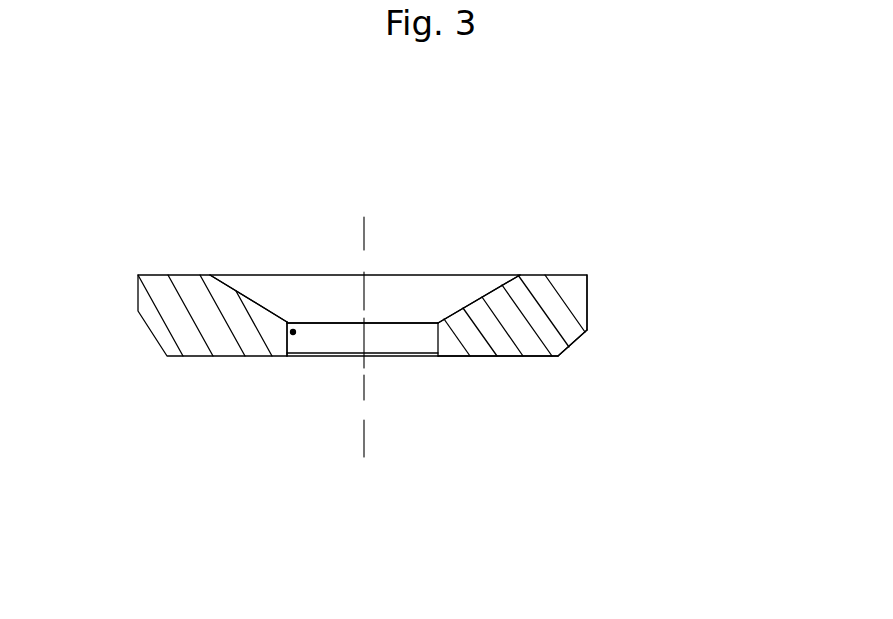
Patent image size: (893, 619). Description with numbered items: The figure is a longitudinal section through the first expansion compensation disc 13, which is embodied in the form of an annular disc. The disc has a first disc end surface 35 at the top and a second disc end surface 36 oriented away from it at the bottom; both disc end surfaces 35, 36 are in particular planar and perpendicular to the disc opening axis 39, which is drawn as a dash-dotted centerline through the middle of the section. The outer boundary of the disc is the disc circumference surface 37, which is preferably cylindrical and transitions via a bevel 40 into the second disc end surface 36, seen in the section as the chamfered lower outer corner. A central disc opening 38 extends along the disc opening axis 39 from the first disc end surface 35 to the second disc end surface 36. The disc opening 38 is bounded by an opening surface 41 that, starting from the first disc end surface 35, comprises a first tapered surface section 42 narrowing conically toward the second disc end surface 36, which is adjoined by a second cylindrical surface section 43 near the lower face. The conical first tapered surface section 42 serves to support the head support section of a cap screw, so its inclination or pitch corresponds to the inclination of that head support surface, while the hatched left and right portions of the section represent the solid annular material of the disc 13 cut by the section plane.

The first expansion compensation disc 13 is at (150, 142).
The first disc end surface 35 is at (543, 276).
The second disc end surface 36 is at (500, 358).
The disc circumference surface 37 is at (589, 300).
The central disc opening 38 is at (413, 330).
The disc opening axis 39 is at (365, 434).
The bevel 40 is at (573, 336).
The opening surface 41 is at (281, 320).
The first tapered surface section 42 is at (246, 298).
The second cylindrical surface section 43 is at (293, 332).